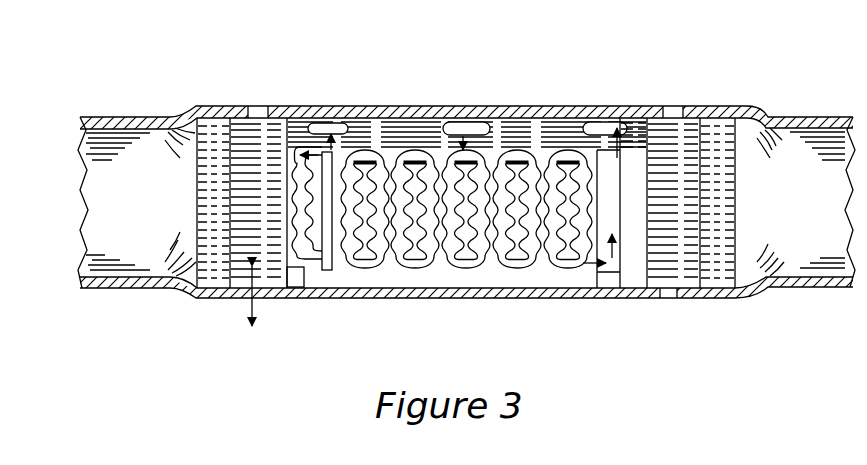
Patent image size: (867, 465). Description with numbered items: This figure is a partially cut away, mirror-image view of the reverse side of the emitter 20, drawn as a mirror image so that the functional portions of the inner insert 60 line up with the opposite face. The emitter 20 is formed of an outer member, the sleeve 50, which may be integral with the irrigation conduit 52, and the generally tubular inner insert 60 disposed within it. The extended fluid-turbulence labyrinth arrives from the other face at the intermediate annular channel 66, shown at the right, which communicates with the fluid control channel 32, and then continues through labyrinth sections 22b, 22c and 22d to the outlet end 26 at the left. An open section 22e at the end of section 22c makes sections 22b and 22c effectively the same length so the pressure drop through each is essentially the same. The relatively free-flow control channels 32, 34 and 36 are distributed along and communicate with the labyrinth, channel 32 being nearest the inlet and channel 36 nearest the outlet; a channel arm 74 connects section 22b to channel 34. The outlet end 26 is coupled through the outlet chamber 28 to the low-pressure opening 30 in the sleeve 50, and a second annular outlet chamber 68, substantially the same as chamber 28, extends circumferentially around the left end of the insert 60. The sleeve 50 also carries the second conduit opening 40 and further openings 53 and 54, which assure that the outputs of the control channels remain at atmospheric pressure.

The emitter 20 is at (226, 59).
The labyrinth section 22b is at (542, 268).
The labyrinth section 22c is at (390, 270).
The labyrinth section 22d is at (292, 212).
The open section 22e is at (327, 262).
The outlet end 26 is at (302, 268).
The outlet chamber 28 is at (673, 250).
The low-pressure opening 30 is at (678, 105).
The fluid control channel 32 is at (613, 123).
The fluid control channel 34 is at (483, 123).
The fluid control channel 36 is at (327, 130).
The second conduit opening 40 is at (262, 105).
The sleeve 50 is at (377, 107).
The irrigation conduit 52 is at (123, 117).
The opening 53 is at (270, 293).
The opening 54 is at (677, 290).
The inner insert 60 is at (196, 218).
The intermediate annular channel 66 is at (609, 205).
The second annular outlet chamber 68 is at (290, 265).
The channel arm 74 is at (460, 137).